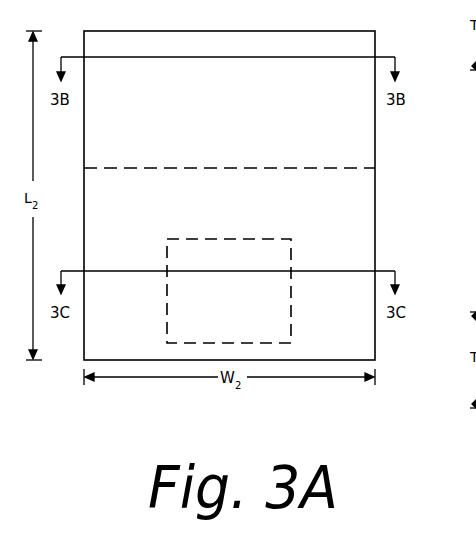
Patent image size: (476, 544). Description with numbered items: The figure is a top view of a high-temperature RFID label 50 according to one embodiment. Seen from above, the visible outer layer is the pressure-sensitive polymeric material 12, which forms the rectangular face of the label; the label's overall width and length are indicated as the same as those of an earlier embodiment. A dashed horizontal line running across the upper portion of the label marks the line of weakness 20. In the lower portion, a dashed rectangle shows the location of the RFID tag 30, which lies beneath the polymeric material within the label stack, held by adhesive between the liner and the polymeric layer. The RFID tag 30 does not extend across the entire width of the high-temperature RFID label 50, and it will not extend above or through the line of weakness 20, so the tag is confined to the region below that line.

The pressure-sensitive polymeric material 12 is at (242, 107).
The line of weakness 20 is at (340, 170).
The RFID tag 30 is at (167, 305).
The high-temperature RFID label 50 is at (83, 430).